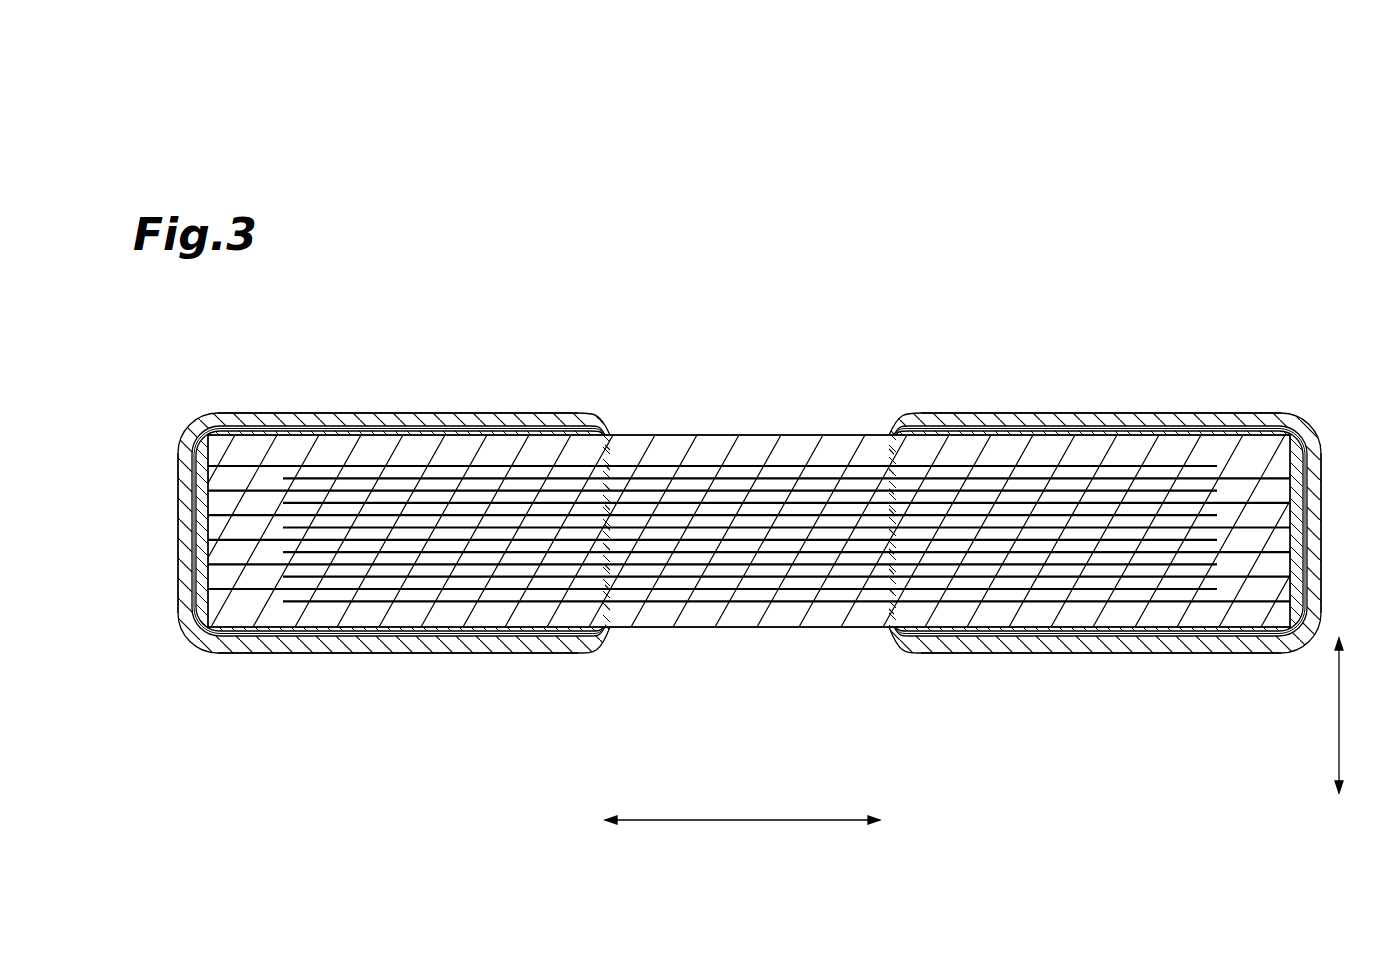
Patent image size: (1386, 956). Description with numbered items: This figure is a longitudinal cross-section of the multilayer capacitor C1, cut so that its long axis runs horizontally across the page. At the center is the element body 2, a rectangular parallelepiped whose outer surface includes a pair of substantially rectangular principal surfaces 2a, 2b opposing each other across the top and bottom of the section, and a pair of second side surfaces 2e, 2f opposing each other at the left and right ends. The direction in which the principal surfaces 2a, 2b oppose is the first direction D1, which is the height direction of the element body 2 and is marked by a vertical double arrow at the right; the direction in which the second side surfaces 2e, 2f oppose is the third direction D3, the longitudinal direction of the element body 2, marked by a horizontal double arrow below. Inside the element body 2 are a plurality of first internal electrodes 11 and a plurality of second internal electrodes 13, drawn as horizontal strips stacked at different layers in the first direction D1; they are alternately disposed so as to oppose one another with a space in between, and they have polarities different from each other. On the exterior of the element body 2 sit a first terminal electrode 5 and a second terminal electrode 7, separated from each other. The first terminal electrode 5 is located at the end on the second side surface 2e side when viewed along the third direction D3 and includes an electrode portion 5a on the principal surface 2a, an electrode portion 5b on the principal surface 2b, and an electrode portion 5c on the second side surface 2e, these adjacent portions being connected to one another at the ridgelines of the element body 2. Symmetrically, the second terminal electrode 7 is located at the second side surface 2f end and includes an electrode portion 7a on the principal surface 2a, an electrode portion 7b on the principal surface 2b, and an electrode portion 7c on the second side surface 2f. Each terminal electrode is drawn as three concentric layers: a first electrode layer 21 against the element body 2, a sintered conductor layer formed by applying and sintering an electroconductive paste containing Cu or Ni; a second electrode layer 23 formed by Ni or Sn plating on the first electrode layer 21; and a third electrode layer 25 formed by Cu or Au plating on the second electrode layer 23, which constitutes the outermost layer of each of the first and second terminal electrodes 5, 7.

The multilayer capacitor C1 is at (1308, 322).
The element body 2 is at (703, 612).
The principal surface 2a is at (742, 436).
The principal surface 2b is at (829, 628).
The second side surface 2e is at (208, 548).
The second side surface 2f is at (1320, 535).
The first terminal electrode 5 is at (463, 308).
The electrode portion 5a is at (506, 413).
The electrode portion 5b is at (420, 655).
The electrode portion 5c is at (177, 533).
The second terminal electrode 7 is at (1181, 308).
The electrode portion 7a is at (985, 413).
The electrode portion 7b is at (1090, 654).
The electrode portion 7c is at (1323, 485).
The first internal electrode 11 is at (668, 462).
The second internal electrode 13 is at (846, 470).
The first electrode layer 21 is at (428, 431).
The second electrode layer 23 is at (384, 428).
The third electrode layer 25 is at (328, 413).
The first direction D1 is at (1339, 725).
The third direction D3 is at (750, 821).